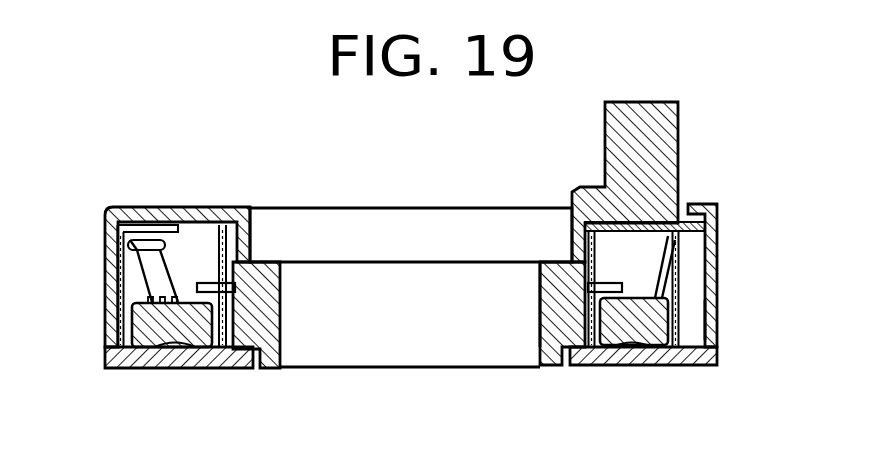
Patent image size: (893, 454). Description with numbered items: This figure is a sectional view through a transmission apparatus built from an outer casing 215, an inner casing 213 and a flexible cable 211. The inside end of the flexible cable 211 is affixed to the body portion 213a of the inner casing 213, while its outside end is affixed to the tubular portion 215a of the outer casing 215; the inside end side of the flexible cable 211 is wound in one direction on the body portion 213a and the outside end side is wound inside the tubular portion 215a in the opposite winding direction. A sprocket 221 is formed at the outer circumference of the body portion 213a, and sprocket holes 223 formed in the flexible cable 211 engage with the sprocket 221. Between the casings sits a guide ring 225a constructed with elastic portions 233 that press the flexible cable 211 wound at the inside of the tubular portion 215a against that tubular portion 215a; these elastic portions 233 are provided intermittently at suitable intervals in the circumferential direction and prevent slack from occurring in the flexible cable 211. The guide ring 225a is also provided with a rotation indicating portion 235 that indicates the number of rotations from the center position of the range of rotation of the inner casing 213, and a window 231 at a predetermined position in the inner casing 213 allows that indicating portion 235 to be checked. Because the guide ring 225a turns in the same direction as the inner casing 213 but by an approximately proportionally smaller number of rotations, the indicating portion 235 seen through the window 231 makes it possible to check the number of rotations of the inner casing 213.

The flexible cable 211 is at (247, 216).
The inner casing 213 is at (577, 185).
The body portion 213a is at (545, 290).
The outer casing 215 is at (661, 367).
The tubular portion 215a is at (708, 325).
The sprocket 221 is at (220, 367).
The sprocket holes 223 is at (208, 240).
The guide ring 225a is at (164, 364).
The window 231 is at (160, 222).
The elastic portions 233 is at (112, 268).
The rotation indicating portion 235 is at (170, 242).